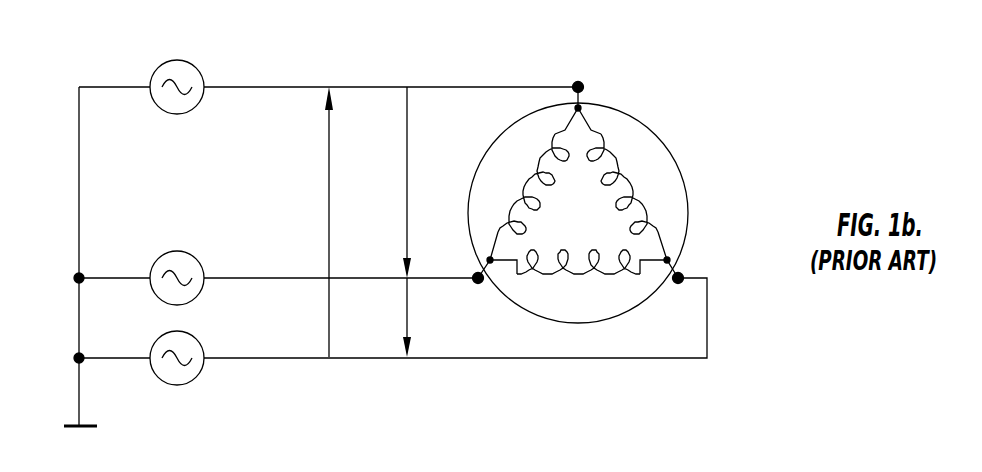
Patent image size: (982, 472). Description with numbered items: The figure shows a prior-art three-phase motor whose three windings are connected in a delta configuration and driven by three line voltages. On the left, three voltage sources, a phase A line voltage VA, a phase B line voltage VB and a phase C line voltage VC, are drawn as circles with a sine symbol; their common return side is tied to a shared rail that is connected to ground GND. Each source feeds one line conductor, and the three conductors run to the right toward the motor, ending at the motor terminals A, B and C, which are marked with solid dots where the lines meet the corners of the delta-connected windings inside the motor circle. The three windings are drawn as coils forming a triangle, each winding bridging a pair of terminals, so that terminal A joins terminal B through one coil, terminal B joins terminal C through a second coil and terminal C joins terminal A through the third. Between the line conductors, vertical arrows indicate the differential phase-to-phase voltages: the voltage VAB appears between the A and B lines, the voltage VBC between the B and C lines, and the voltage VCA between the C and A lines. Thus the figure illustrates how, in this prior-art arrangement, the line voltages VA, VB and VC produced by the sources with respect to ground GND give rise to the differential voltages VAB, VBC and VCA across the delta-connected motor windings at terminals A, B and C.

The phase A line voltage VA is at (177, 375).
The phase B line voltage VB is at (177, 264).
The phase C line voltage VC is at (177, 71).
The differential phase-phase voltage A-B VAB is at (389, 317).
The differential phase-phase voltage B-C VBC is at (389, 182).
The differential phase-phase voltage C-A VCA is at (310, 222).
The motor terminal A is at (678, 291).
The motor terminal B is at (480, 291).
The motor terminal C is at (586, 88).
The ground GND is at (61, 412).